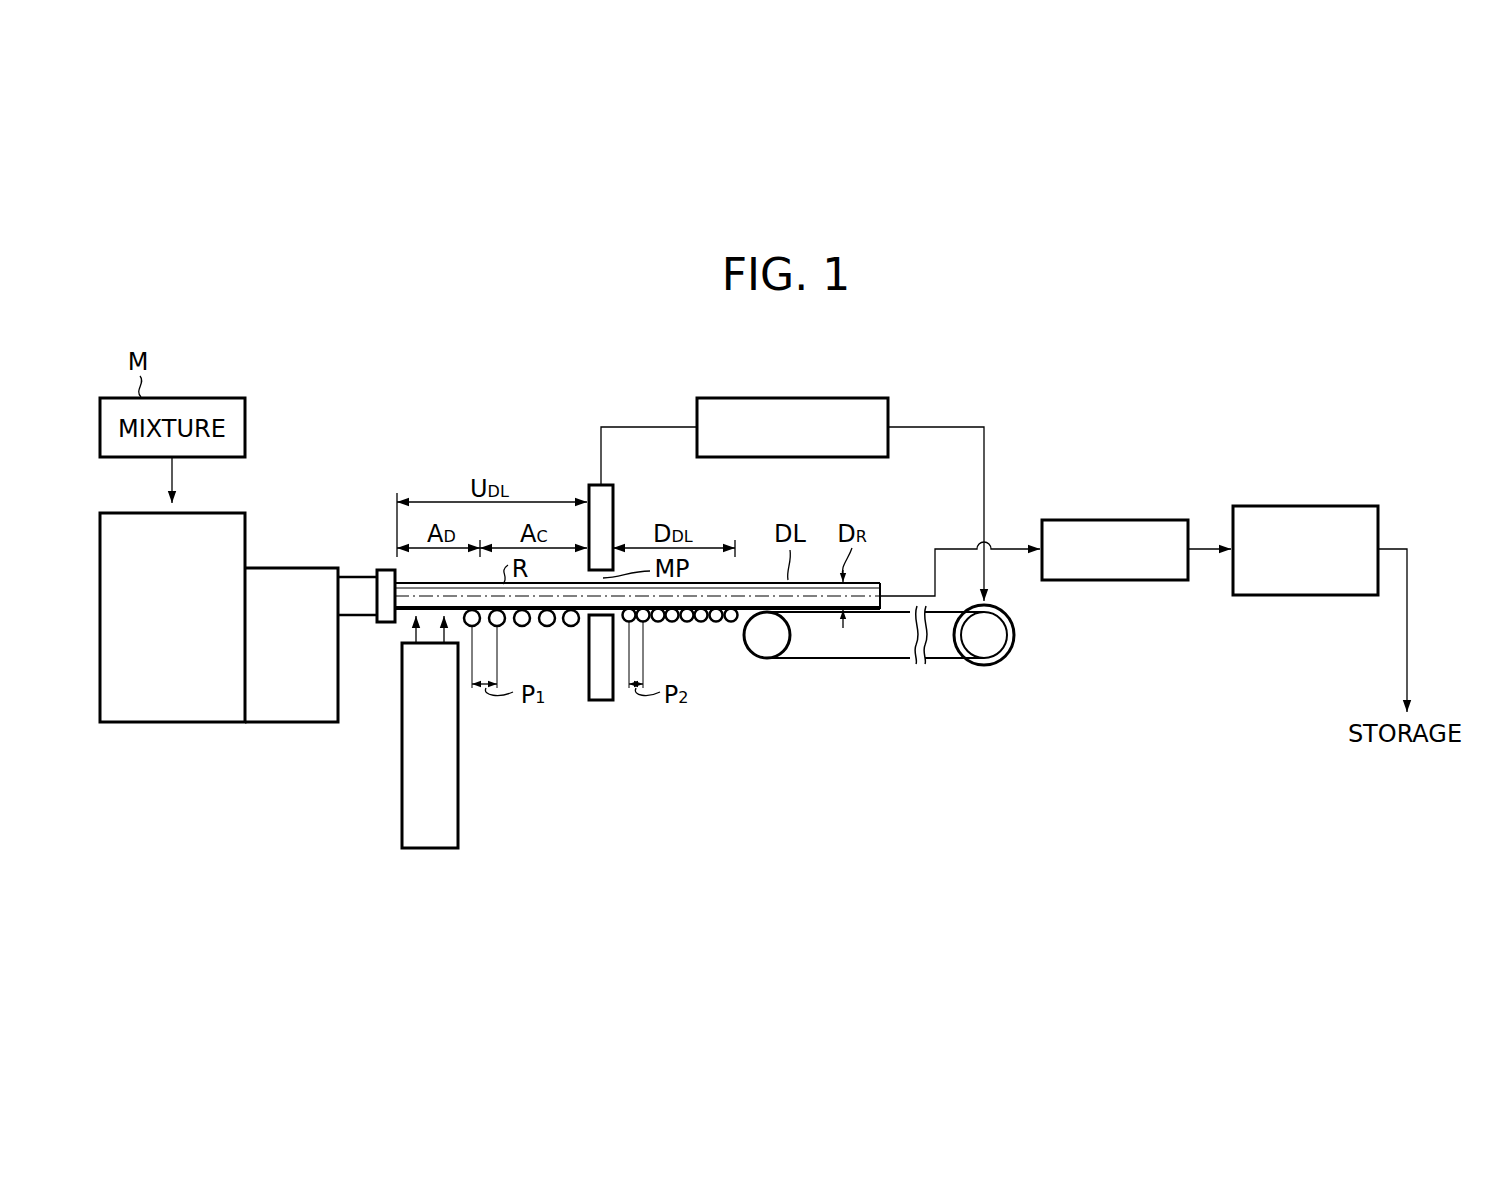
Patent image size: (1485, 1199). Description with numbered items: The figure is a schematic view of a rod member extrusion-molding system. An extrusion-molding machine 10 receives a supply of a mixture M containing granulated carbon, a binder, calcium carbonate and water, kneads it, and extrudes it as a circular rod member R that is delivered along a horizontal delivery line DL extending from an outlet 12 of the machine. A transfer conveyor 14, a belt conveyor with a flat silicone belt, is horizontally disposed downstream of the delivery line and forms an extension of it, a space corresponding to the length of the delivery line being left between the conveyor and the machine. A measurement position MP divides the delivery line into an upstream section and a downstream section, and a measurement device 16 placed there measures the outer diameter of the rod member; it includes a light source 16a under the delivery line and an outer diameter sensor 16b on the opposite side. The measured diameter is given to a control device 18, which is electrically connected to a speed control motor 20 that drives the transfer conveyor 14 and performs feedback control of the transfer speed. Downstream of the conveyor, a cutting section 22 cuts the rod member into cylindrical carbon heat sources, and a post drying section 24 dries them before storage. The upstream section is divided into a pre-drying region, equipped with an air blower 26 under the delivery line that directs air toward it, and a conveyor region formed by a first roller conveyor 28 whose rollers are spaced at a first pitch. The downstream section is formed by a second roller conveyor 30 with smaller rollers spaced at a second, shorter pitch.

The extrusion-molding machine 10 is at (140, 713).
The outlet 12 is at (384, 572).
The transfer conveyor 14 is at (847, 660).
The measurement device 16 is at (628, 635).
The light source 16a is at (597, 700).
The outer diameter sensor 16b is at (601, 493).
The control device 18 is at (757, 397).
The speed control motor 20 is at (1010, 651).
The cutting section 22 is at (1093, 519).
The post drying section 24 is at (1258, 505).
The air blower 26 is at (458, 808).
The first roller conveyor 28 is at (463, 710).
The second roller conveyor 30 is at (623, 710).